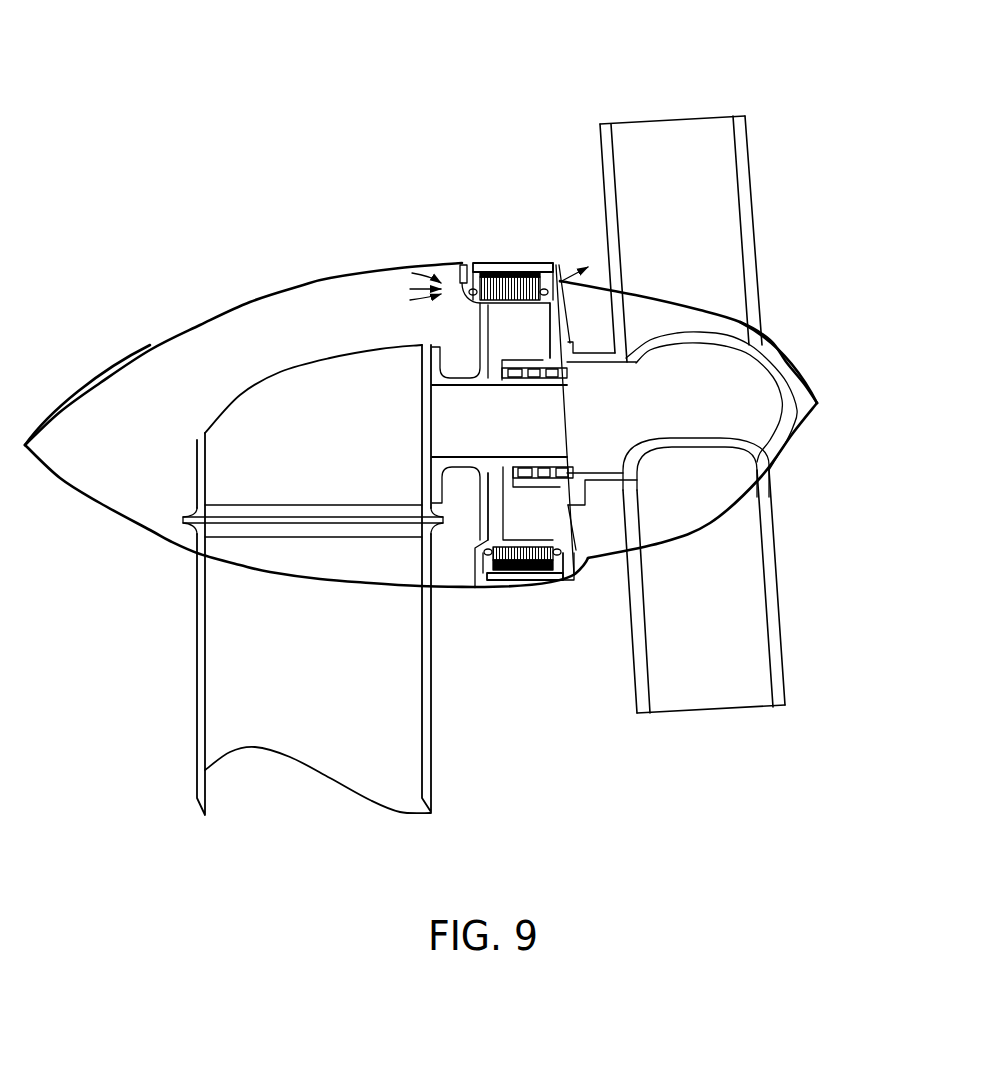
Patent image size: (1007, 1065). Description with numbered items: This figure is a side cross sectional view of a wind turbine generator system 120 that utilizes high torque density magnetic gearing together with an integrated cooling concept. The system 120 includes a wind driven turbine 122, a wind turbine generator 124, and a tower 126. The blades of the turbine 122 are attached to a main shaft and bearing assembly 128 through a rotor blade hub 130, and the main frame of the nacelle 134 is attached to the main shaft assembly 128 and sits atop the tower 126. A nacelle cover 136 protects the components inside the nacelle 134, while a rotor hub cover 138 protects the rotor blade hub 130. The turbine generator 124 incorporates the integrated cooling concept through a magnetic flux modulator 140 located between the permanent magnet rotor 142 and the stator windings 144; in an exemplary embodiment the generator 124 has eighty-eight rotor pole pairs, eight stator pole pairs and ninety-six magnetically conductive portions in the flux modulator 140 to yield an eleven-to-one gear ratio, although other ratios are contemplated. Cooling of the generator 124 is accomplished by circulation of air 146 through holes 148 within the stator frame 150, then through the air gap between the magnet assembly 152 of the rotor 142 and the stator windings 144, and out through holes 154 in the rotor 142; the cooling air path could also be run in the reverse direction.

The wind turbine generator system 120 is at (720, 46).
The wind driven turbine 122 is at (752, 217).
The wind turbine generator 124 is at (468, 238).
The tower 126 is at (197, 668).
The main shaft and bearing assembly 128 is at (522, 436).
The rotor blade hub 130 is at (763, 417).
The nacelle 134 is at (336, 266).
The nacelle cover 136 is at (217, 309).
The rotor hub cover 138 is at (792, 364).
The magnetic flux modulator 140 is at (552, 259).
The permanent magnet rotor 142 is at (530, 265).
The stator windings 144 is at (568, 576).
The air 146 is at (414, 305).
The holes 148 is at (463, 266).
The stator frame 150 is at (498, 500).
The magnet assembly 152 is at (527, 572).
The holes 154 is at (553, 292).